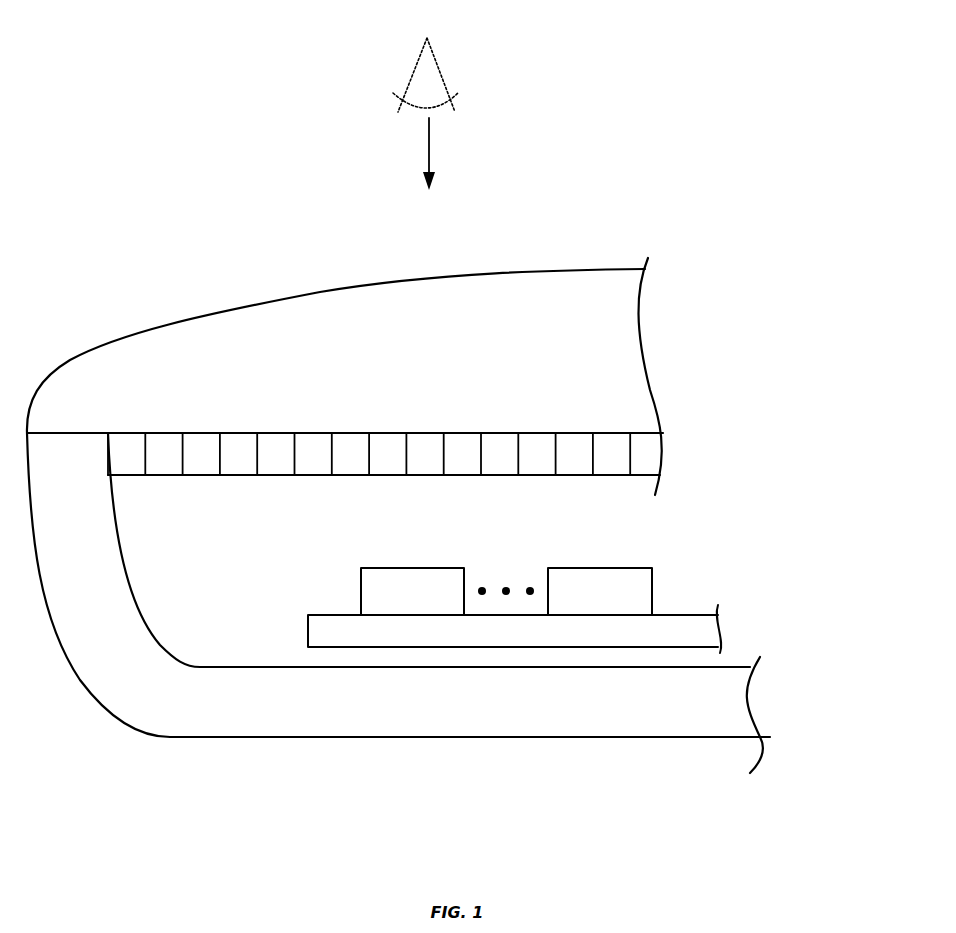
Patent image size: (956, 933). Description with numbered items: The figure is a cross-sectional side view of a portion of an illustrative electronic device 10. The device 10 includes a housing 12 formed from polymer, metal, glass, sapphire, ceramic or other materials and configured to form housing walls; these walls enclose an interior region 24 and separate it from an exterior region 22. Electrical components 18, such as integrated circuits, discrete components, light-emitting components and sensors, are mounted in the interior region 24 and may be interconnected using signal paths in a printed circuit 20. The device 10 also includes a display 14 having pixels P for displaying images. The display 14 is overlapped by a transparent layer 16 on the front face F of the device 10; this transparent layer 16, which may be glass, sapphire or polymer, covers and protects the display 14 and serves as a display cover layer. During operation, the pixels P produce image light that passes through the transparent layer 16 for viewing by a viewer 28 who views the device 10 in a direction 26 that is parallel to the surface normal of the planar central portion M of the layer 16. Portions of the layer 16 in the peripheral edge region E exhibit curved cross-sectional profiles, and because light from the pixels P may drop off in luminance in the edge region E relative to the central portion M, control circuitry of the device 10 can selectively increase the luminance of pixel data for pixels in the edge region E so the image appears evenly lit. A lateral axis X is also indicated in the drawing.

The electronic device 10 is at (813, 263).
The housing 12 is at (582, 727).
The display 14 is at (663, 455).
The transparent layer 16 is at (700, 263).
The electrical components 18 is at (563, 588).
The printed circuit 20 is at (317, 638).
The exterior region 22 is at (714, 179).
The interior region 24 is at (243, 653).
The direction 26 is at (430, 147).
The viewer 28 is at (438, 63).
The peripheral edge region E is at (188, 283).
The front face F is at (270, 197).
The planar central portion M is at (546, 238).
The pixels P is at (165, 465).
The X direction X is at (75, 844).